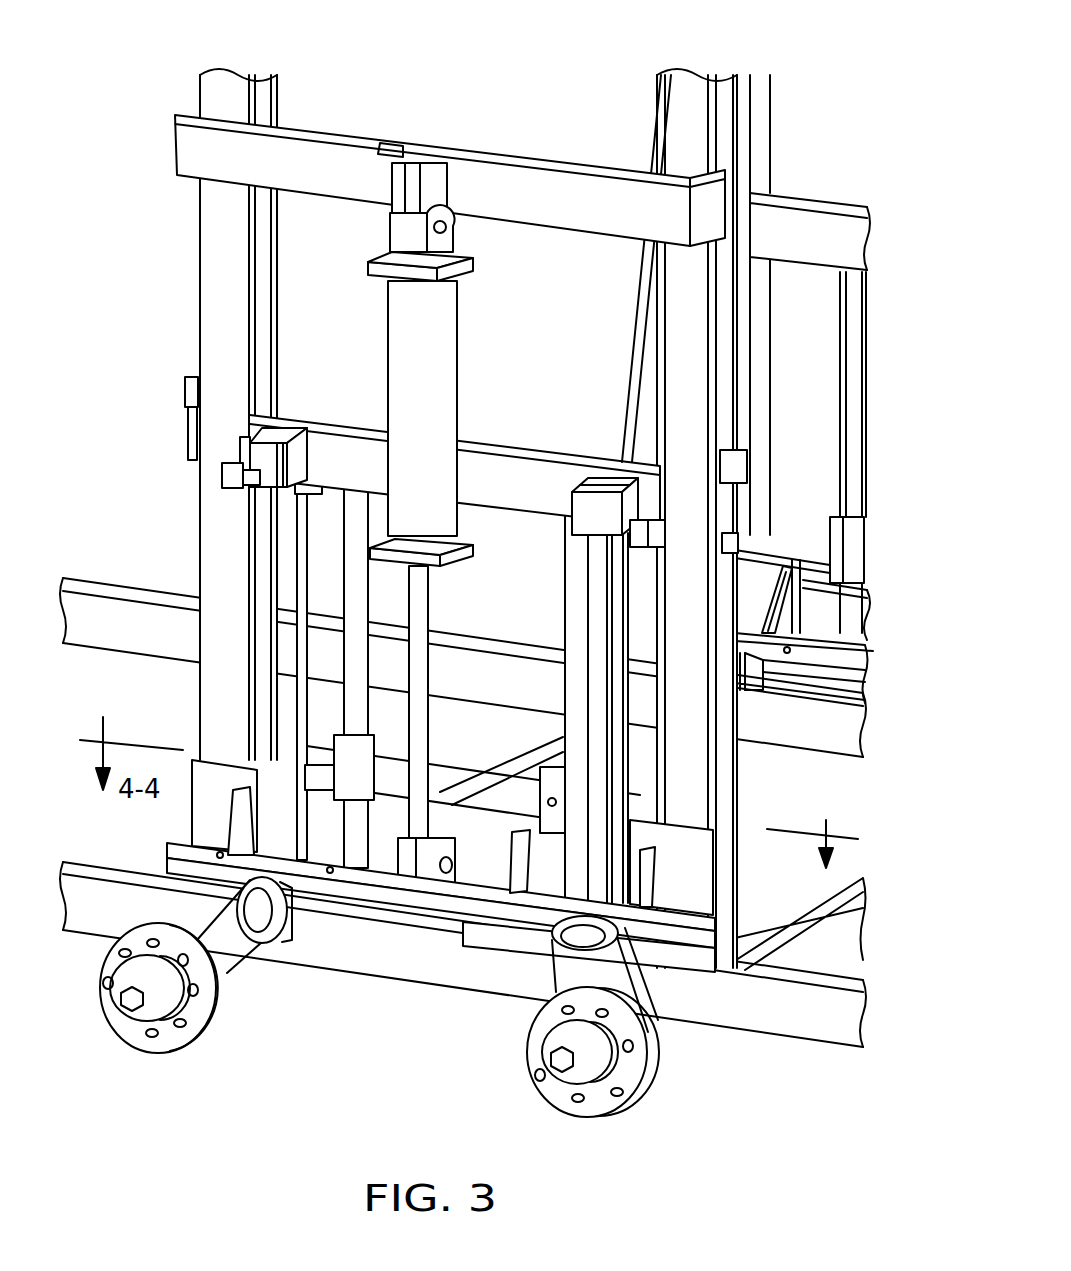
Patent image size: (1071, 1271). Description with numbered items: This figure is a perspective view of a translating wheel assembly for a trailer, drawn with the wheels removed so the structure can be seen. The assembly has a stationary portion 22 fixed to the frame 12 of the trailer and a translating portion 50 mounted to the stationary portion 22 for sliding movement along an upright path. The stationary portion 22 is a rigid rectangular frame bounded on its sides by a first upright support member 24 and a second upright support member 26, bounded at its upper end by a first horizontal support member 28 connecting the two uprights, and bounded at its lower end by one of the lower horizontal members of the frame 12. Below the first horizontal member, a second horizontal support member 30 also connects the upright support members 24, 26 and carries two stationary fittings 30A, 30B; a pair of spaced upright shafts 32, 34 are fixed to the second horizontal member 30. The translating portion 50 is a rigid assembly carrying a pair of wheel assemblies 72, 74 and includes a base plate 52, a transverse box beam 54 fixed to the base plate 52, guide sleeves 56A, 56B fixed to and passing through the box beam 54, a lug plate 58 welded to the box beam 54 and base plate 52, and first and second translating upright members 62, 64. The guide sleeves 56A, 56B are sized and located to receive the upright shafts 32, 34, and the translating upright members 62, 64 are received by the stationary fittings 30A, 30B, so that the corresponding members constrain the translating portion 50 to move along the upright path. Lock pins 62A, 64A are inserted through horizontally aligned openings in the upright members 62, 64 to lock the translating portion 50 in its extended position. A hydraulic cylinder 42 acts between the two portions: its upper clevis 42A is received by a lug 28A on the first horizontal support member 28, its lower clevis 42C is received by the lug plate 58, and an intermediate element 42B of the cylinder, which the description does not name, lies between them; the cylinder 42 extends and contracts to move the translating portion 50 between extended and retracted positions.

The frame 12 is at (463, 812).
The stationary portion 22 is at (346, 104).
The first upright support member 24 is at (238, 368).
The second upright support member 26 is at (700, 434).
The first horizontal support member 28 is at (555, 211).
The lug 28A is at (432, 185).
The second horizontal support member 30 is at (523, 498).
The stationary fitting 30A is at (295, 450).
The stationary fitting 30B is at (588, 468).
The upright shaft 32 is at (352, 530).
The upright shaft 34 is at (560, 575).
The hydraulic cylinder 42 is at (461, 546).
The clevis 42A is at (455, 238).
The piston rod 42B is at (418, 613).
The clevis 42C is at (447, 835).
The translating portion 50 is at (187, 806).
The base plate 52 is at (467, 905).
The transverse box beam 54 is at (515, 861).
The guide sleeve 56A is at (372, 780).
The guide sleeve 56B is at (566, 783).
The lug plate 58 is at (462, 865).
The first translating upright member 62 is at (297, 655).
The lock pin 62A is at (225, 470).
The second translating upright member 64 is at (605, 640).
The lock pin 64A is at (663, 540).
The wheel assembly 72 is at (232, 1013).
The wheel assembly 74 is at (648, 1070).